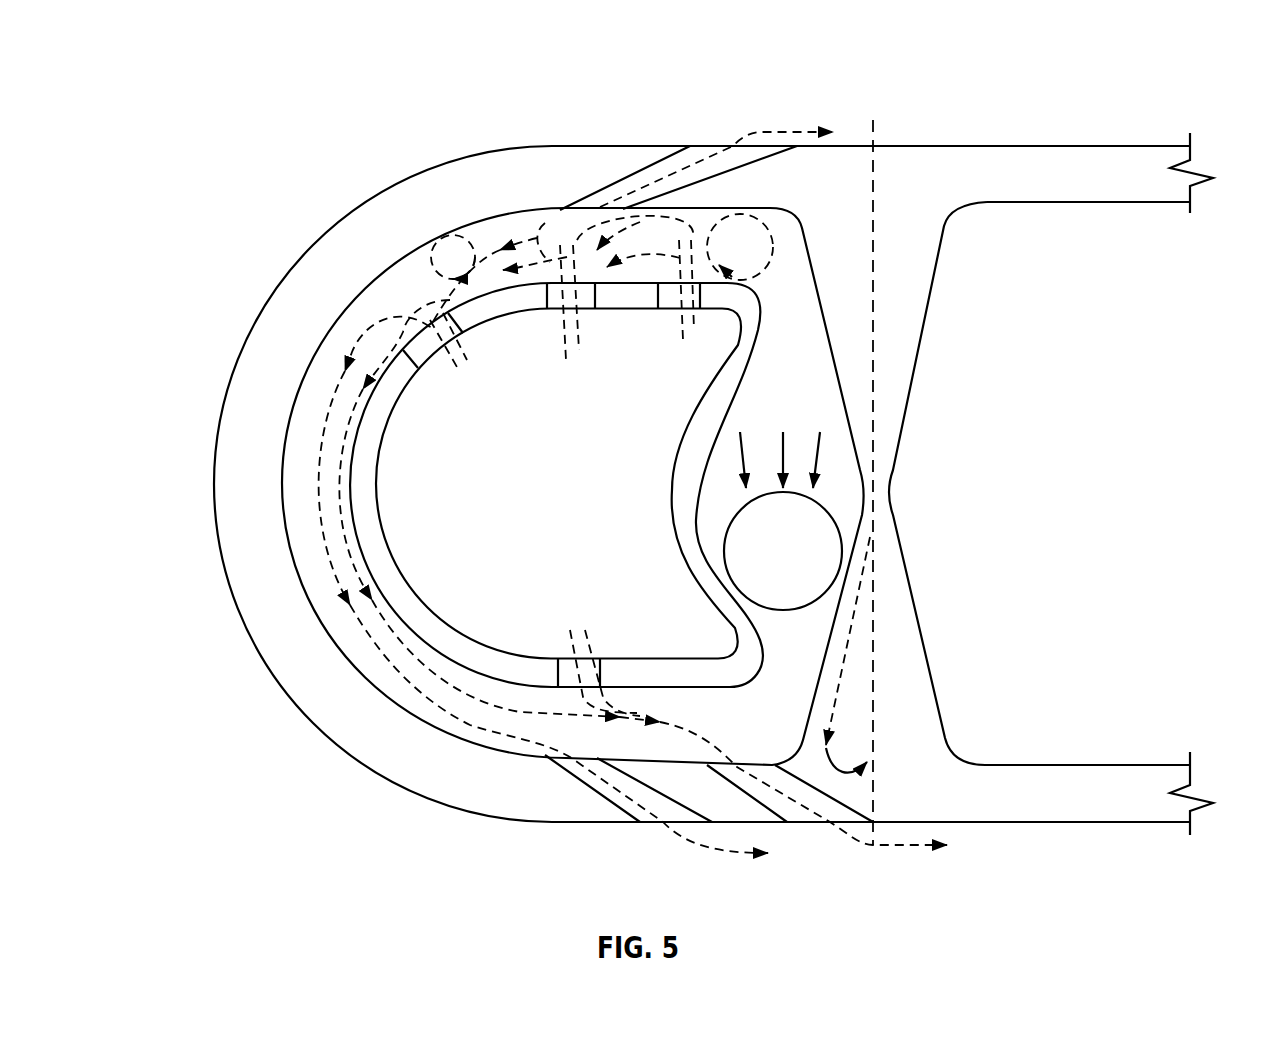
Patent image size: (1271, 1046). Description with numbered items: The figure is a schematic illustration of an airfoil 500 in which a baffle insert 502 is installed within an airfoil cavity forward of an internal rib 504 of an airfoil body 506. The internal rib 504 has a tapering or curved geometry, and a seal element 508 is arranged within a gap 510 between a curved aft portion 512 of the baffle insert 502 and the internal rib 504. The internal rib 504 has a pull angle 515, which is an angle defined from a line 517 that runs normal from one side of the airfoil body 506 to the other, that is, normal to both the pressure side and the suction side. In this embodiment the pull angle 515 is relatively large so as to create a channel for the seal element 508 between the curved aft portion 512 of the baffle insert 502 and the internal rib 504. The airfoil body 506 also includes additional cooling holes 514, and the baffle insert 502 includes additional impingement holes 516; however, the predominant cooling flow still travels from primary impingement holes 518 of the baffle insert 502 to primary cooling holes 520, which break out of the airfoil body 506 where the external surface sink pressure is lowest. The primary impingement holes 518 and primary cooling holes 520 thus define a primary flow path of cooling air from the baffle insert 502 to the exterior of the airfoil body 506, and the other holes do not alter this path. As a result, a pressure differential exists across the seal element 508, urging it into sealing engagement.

The airfoil 500 is at (175, 75).
The baffle insert 502 is at (417, 603).
The internal rib 504 is at (898, 655).
The airfoil body 506 is at (947, 185).
The seal element 508 is at (795, 553).
The gap 510 is at (800, 393).
The curved aft portion 512 is at (683, 482).
The additional cooling holes 514 is at (714, 132).
The pull angle 515 is at (846, 772).
The additional impingement holes 516 is at (593, 645).
The line 517 is at (873, 168).
The primary impingement holes 518 is at (460, 343).
The primary cooling holes 520 is at (656, 827).